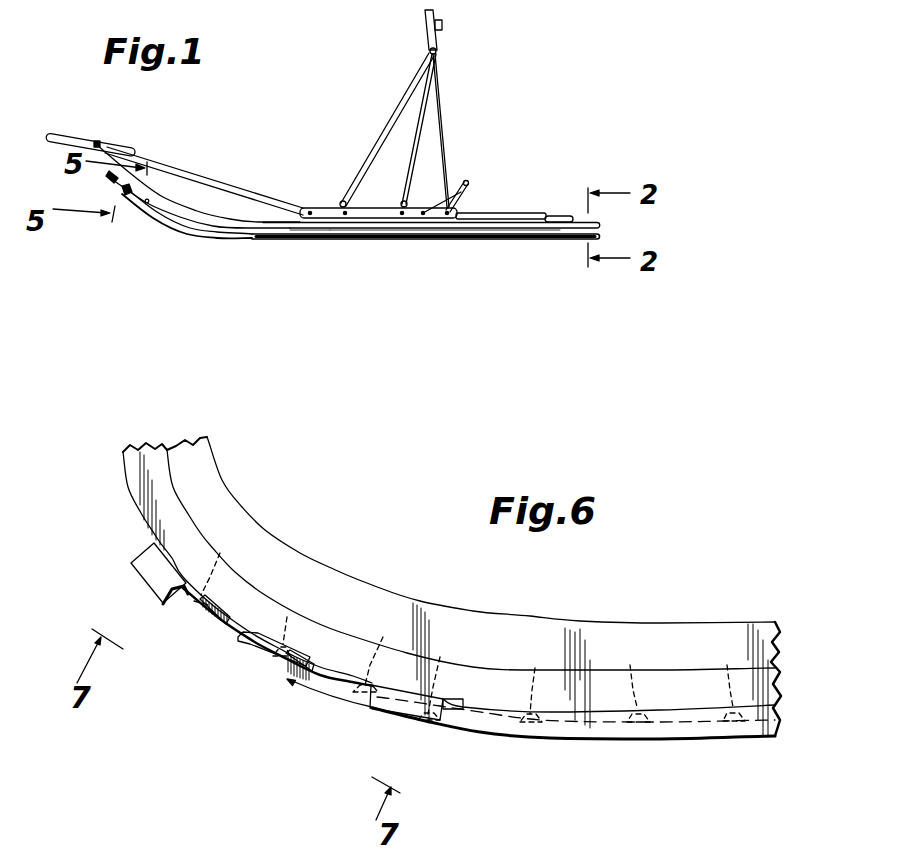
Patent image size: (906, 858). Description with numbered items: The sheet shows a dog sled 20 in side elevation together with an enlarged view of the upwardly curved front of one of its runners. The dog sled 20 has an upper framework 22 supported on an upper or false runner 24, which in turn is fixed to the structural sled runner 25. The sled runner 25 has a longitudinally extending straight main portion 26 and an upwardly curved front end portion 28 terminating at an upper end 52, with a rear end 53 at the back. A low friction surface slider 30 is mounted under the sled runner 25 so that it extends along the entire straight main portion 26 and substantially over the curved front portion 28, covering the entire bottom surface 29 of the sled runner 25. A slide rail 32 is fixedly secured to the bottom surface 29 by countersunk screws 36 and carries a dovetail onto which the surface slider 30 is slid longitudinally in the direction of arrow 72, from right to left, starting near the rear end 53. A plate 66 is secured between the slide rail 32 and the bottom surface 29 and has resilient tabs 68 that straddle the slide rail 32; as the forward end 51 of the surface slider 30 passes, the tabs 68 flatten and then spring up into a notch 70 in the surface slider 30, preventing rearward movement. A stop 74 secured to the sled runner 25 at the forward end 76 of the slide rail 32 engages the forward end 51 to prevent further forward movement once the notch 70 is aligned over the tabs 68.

In FIG. 1, the dog sled 20 is at (330, 122).
In FIG. 1, the upper framework 22 is at (441, 86).
In FIG. 1, the upper runner 24 is at (281, 218).
In FIG. 6, the upper runner 24 is at (575, 632).
In FIG. 1, the sled runner 25 is at (264, 224).
In FIG. 6, the sled runner 25 is at (505, 662).
In FIG. 1, the straight main portion 26 is at (378, 230).
In FIG. 1, the curved front end portion 28 is at (158, 214).
In FIG. 6, the curved front end portion 28 is at (268, 600).
In FIG. 1, the bottom surface 29 is at (300, 233).
In FIG. 6, the bottom surface 29 is at (672, 708).
In FIG. 1, the surface slider 30 is at (207, 238).
In FIG. 6, the surface slider 30 is at (667, 738).
In FIG. 6, the slide rail 32 is at (225, 608).
In FIG. 6, the countersunk screws 36 is at (232, 556).
In FIG. 1, the forward end 51 is at (124, 191).
In FIG. 6, the forward end 51 is at (362, 708).
In FIG. 1, the upper end 52 is at (108, 173).
In FIG. 6, the upper end 52 is at (136, 513).
In FIG. 1, the rear end 53 is at (607, 232).
In FIG. 6, the plate 66 is at (311, 654).
In FIG. 6, the resilient tabs 68 is at (248, 646).
In FIG. 6, the notch 70 is at (468, 716).
In FIG. 6, the arrow 72 is at (320, 700).
In FIG. 6, the stop 74 is at (145, 581).
In FIG. 6, the forward end of the slide rail 76 is at (162, 606).